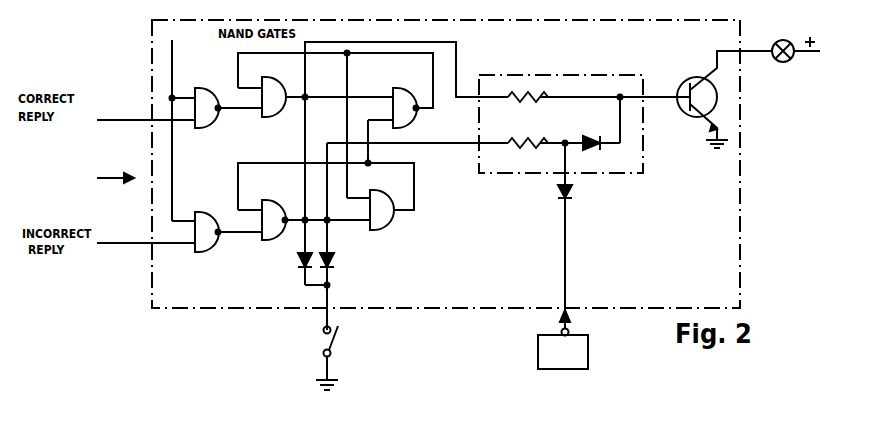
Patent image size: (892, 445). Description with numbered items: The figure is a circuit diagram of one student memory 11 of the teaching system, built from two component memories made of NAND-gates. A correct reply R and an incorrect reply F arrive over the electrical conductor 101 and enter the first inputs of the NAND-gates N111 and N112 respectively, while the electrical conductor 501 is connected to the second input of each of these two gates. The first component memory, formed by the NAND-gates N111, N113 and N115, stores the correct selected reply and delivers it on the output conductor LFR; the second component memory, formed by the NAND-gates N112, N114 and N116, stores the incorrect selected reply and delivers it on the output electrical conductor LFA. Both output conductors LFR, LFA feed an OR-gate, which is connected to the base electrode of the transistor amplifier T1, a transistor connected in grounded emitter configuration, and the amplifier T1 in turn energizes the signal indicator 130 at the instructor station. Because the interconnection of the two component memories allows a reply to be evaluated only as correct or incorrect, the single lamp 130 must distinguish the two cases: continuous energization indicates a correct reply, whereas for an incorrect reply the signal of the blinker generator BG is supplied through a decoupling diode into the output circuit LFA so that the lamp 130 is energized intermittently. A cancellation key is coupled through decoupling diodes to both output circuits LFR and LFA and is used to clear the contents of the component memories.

The electrical conductor 501 is at (172, 49).
The electrical conductor 101 is at (115, 187).
The correct reply R is at (146, 110).
The incorrect reply F is at (146, 253).
The NAND-gate N111 is at (207, 96).
The NAND-gate N112 is at (210, 204).
The NAND-gate N113 is at (268, 120).
The NAND-gate N114 is at (270, 207).
The NAND-gate N115 is at (401, 96).
The NAND-gate N116 is at (381, 228).
The output conductor LFR is at (460, 54).
The output electrical conductor LFA is at (467, 150).
The student memory 11 is at (507, 162).
The blinker generator BG is at (519, 371).
The transistor amplifier T1 is at (689, 110).
The signal indicator 130 is at (778, 62).